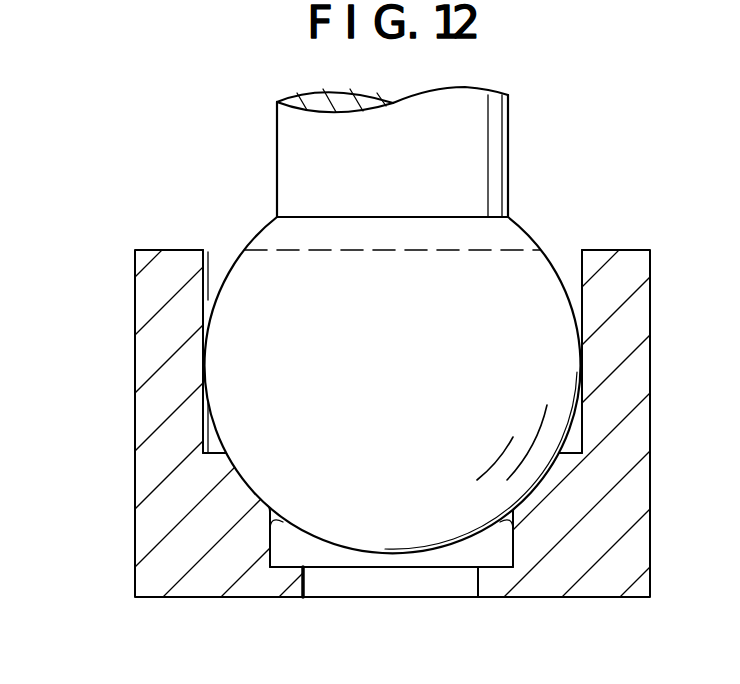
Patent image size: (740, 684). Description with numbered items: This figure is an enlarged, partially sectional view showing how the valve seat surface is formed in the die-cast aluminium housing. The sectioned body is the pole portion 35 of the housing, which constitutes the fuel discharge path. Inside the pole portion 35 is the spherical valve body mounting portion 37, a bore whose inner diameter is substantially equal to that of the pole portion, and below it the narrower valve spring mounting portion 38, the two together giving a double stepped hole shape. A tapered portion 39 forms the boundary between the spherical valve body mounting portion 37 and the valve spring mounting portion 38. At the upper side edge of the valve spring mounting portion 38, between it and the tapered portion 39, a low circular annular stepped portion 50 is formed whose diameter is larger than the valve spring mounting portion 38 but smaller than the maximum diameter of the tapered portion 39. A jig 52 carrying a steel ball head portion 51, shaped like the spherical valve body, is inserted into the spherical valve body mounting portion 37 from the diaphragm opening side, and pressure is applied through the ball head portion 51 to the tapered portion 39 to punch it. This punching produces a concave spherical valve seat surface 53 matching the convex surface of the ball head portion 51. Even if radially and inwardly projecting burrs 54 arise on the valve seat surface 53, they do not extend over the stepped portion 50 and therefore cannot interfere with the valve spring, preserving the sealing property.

The pole portion 35 is at (134, 328).
The spherical valve body mounting portion 37 is at (212, 290).
The valve spring mounting portion 38 is at (391, 577).
The tapered portion 39 is at (228, 456).
The stepped portion 50 is at (284, 560).
The head portion 51 is at (515, 241).
The jig 52 is at (509, 161).
The valve seat surface 53 is at (248, 502).
The burrs 54 is at (508, 518).